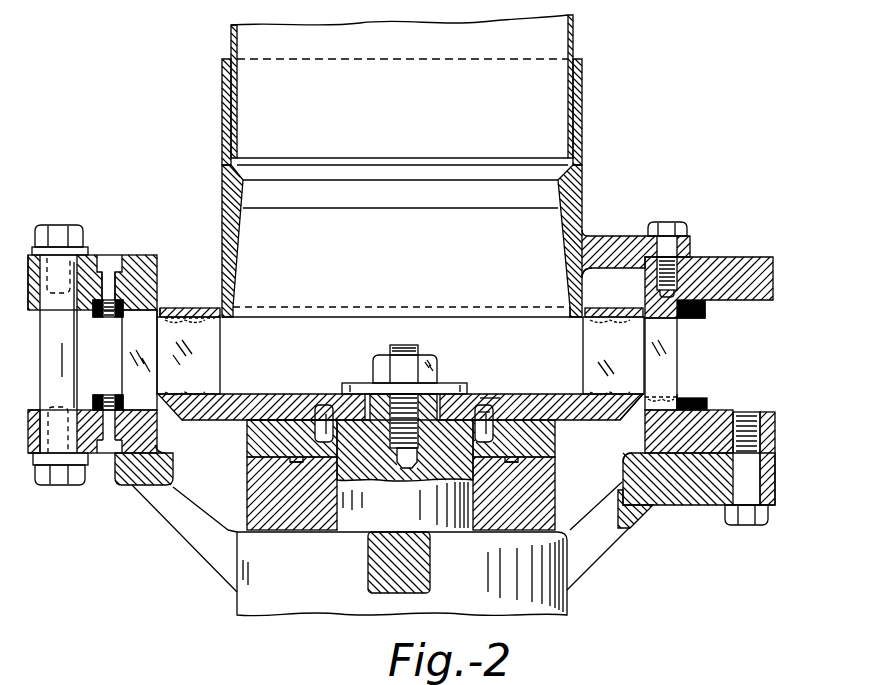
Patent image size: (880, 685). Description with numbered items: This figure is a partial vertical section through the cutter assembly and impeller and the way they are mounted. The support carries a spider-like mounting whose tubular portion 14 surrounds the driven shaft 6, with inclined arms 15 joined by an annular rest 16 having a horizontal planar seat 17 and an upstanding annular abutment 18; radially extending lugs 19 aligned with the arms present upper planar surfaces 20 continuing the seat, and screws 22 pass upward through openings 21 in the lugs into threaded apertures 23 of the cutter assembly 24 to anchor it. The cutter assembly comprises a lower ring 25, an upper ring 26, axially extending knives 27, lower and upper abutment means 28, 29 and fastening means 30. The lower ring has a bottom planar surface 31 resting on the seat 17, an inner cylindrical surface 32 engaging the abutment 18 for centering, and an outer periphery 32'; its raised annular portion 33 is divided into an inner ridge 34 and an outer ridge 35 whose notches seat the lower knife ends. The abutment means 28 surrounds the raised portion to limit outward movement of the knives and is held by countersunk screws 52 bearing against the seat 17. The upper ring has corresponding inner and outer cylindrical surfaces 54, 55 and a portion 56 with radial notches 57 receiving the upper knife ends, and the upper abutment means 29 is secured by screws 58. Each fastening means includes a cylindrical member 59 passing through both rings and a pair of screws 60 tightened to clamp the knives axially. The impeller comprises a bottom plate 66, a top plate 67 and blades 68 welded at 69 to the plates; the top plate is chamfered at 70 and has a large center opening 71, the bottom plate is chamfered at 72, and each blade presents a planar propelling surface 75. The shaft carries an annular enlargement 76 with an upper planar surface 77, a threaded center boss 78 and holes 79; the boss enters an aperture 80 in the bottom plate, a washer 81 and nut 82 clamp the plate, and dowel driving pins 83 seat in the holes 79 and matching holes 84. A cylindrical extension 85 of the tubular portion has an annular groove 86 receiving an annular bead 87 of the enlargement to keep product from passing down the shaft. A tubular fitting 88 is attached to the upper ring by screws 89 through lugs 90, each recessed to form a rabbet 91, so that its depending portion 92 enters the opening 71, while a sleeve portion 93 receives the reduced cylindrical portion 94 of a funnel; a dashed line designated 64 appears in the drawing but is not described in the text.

The driven shaft 6 is at (362, 530).
The tubular portion 14 is at (240, 605).
The inclined arms 15 is at (200, 559).
The annular rest 16 is at (122, 487).
The horizontal planar seat 17 is at (158, 440).
The upstanding annular abutment 18 is at (160, 452).
The radially extending lugs 19 is at (771, 518).
The upper planar surfaces 20 is at (734, 462).
The openings 21 is at (734, 482).
The screws 22 is at (746, 526).
The threaded apertures 23 is at (783, 402).
The cutter assembly 24 is at (104, 254).
The lower ring 25 is at (34, 457).
The upper ring 26 is at (30, 300).
The knives 27 is at (121, 352).
The lower abutment means 28 is at (96, 406).
The upper abutment means 29 is at (100, 316).
The fastening means 30 is at (50, 219).
The bottom planar surface 31 is at (125, 470).
The inner cylindrical surface 32 is at (401, 457).
The outer cylindrical surface 32' is at (29, 419).
The raised annular portion 33 is at (682, 400).
The inner annular ridge 34 is at (648, 397).
The outer annular ridge 35 is at (677, 392).
The screws 52 is at (110, 449).
The inner cylindrical surface 54 is at (645, 283).
The outer cylindrical surface 55 is at (773, 262).
The portion 56 is at (650, 307).
The notches 57 is at (150, 316).
The screws 58 is at (109, 270).
The cylindrical member 59 is at (45, 333).
The screws 60 is at (56, 224).
The diaphragm 64 is at (353, 305).
The bottom plate 66 is at (280, 394).
The top plate 67 is at (218, 305).
The blades 68 is at (223, 353).
The welds 69 is at (205, 390).
The bevel 70 is at (168, 308).
The center opening 71 is at (222, 322).
The bevel 72 is at (630, 422).
The planar propelling surface 75 is at (587, 358).
The annular enlargement 76 is at (250, 447).
The upper planar surface 77 is at (250, 437).
The internally threaded boss 78 is at (432, 395).
The holes 79 is at (505, 400).
The aperture 80 is at (362, 390).
The washer 81 is at (467, 394).
The nut 82 is at (432, 362).
The dowel driving pins 83 is at (492, 402).
The matching holes 84 is at (487, 400).
The cylindrical extension 85 is at (547, 497).
The annular groove 86 is at (520, 462).
The annular bead 87 is at (521, 455).
The tubular fitting 88 is at (583, 186).
The screws 89 is at (668, 222).
The lugs 90 is at (634, 236).
The rabbet 91 is at (642, 262).
The depending portion 92 is at (572, 313).
The outer tube 93 is at (582, 108).
The reduced cylindrical portion 94 is at (574, 46).